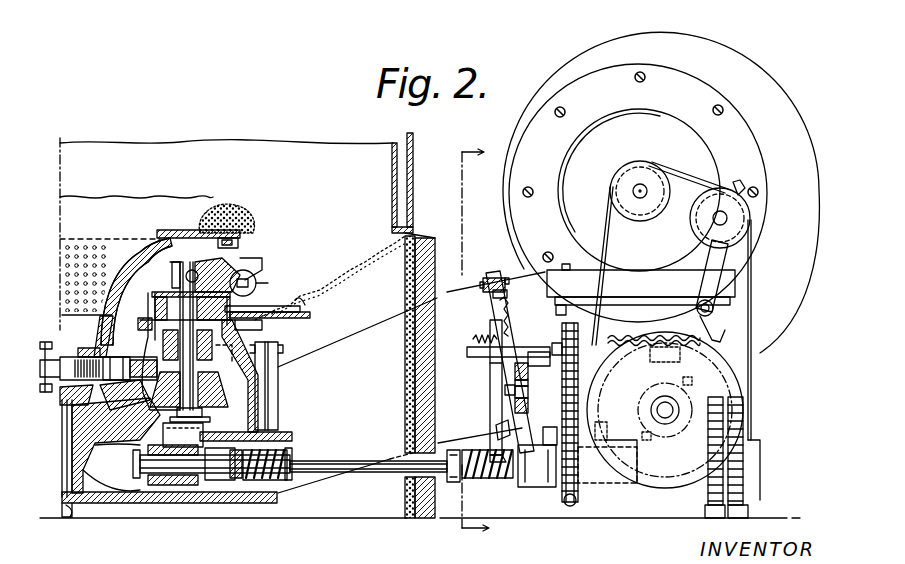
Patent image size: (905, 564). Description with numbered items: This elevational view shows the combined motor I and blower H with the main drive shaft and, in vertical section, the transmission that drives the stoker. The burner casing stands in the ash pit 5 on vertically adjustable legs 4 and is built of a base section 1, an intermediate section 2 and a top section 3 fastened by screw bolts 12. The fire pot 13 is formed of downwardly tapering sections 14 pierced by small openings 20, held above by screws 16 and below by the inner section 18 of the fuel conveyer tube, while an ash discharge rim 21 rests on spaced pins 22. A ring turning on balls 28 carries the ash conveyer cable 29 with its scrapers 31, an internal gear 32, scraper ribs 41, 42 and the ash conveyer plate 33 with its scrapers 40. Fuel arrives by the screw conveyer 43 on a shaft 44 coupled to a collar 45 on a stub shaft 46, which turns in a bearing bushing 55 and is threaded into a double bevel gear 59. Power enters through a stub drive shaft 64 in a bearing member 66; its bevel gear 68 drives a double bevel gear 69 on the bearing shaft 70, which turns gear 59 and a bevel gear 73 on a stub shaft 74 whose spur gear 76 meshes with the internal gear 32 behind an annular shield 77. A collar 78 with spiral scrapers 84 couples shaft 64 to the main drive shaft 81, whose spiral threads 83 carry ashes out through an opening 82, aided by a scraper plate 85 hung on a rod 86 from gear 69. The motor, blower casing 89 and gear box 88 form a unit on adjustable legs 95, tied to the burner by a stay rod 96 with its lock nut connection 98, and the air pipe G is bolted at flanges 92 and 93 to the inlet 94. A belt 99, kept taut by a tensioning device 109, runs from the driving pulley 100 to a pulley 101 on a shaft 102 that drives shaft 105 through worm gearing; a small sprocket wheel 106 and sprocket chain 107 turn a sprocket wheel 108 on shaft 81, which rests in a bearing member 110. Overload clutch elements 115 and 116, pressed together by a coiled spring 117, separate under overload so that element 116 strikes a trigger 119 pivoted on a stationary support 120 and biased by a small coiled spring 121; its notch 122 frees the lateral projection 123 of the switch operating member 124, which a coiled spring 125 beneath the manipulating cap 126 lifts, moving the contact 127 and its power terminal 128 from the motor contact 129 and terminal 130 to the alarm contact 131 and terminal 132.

The base section 1 is at (125, 504).
The intermediate section 2 is at (262, 424).
The top section 3 is at (262, 264).
The vertically adjustable legs 4 is at (70, 514).
The ash pit 5 is at (330, 278).
The screw bolts 12 is at (172, 273).
The fire pot 13 is at (140, 262).
The downwardly tapering sections 14 is at (185, 230).
The screws 16 is at (215, 205).
The inner section of the fuel conveyer tube 18 is at (100, 335).
The small openings 20 is at (79, 241).
The ash discharge rim 21 is at (245, 231).
The spaced pins 22 is at (250, 245).
The balls 28 is at (188, 270).
The ash conveyer cable 29 is at (258, 285).
The scrapers 31 is at (270, 288).
The internal gear 32 is at (250, 284).
The ash conveyer plate 33 is at (305, 306).
The scrapers 40 is at (320, 319).
The scraper rib 41 is at (262, 326).
The scraper rib 42 is at (236, 362).
The screw conveyer 43 is at (45, 342).
The shaft 44 is at (47, 389).
The collar 45 is at (88, 354).
The stub shaft 46 is at (112, 397).
The bearing bushing 55 is at (98, 368).
The double bevel gear 59 is at (140, 322).
The stub drive shaft 64 is at (155, 477).
The bearing member 66 is at (190, 479).
The bevel gear 68 is at (132, 483).
The double bevel gear 69 is at (125, 452).
The bearing shaft 70 is at (63, 439).
The bevel gear 73 is at (270, 394).
The stub shaft 74 is at (180, 379).
The spur gear 76 is at (165, 302).
The annular shield 77 is at (285, 375).
The collar 78 is at (268, 484).
The main drive shaft 81 is at (370, 475).
The opening 82 is at (300, 497).
The spiral threads 83 is at (292, 442).
The spiral scrapers 84 is at (238, 480).
The scraper plate 85 is at (215, 482).
The rod 86 is at (183, 437).
The gear box 88 is at (641, 313).
The blower casing 89 is at (782, 313).
The flanges 92 is at (493, 273).
The flanges 93 is at (270, 409).
The inlet 94 is at (285, 434).
The adjustable legs 95 is at (745, 469).
The stay rod 96 is at (585, 406).
The lock nut connection 98 is at (603, 423).
The belt 99 is at (606, 215).
The driving pulley 100 is at (628, 177).
The pulley 101 is at (740, 375).
The shaft 102 is at (668, 423).
The shaft 105 is at (548, 347).
The small sprocket wheel 106 is at (555, 341).
The sprocket chain 107 is at (580, 506).
The sprocket wheel 108 is at (570, 507).
The tensioning device 109 is at (700, 224).
The bearing member 110 is at (620, 489).
The overload clutch element 115 is at (552, 491).
The clutch element 116 is at (548, 491).
The coiled spring 117 is at (490, 480).
The trigger 119 is at (490, 395).
The stationary support 120 is at (467, 353).
The small coiled spring 121 is at (478, 337).
The notch 122 is at (492, 416).
The lateral projection 123 is at (493, 430).
The switch operating member 124 is at (495, 368).
The coiled spring 125 is at (493, 291).
The manipulating cap 126 is at (487, 284).
The contact 127 is at (530, 388).
The terminal 128 is at (508, 382).
The contact 129 is at (530, 400).
The terminal 130 is at (530, 411).
The upper contact 131 is at (530, 373).
The terminal 132 is at (533, 353).